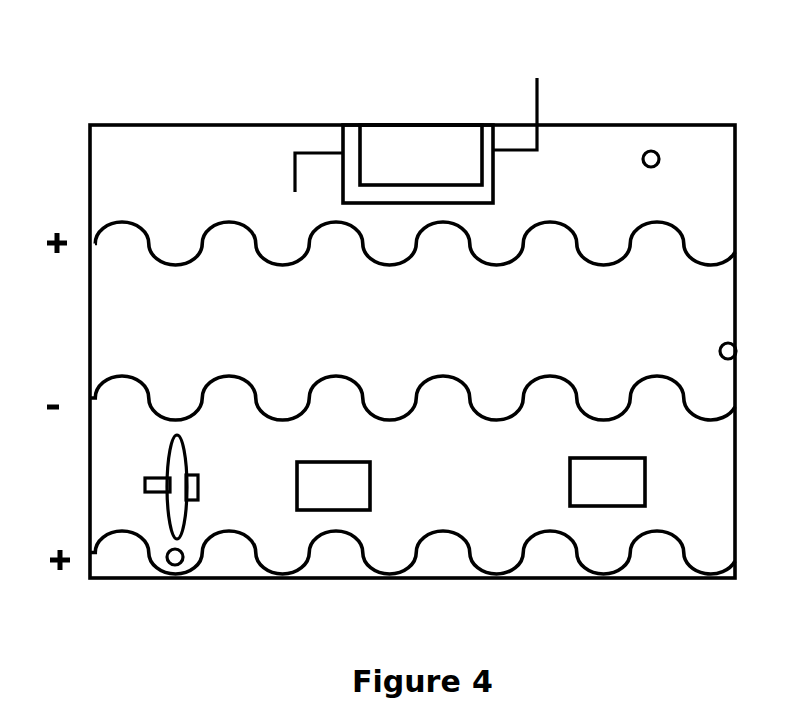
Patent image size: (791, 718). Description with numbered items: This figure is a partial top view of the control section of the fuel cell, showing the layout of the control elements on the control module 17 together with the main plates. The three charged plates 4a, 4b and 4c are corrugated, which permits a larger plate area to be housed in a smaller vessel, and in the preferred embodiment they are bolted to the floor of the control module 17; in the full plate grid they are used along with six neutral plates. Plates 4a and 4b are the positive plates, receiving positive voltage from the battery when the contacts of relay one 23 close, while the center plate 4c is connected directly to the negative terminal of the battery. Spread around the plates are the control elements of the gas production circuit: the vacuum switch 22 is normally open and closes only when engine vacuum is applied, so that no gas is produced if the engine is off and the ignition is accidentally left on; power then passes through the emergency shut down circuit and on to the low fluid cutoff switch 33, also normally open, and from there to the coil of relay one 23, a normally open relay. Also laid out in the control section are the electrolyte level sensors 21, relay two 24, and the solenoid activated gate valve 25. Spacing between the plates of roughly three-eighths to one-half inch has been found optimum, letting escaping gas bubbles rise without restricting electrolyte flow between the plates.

The positive plate 4a is at (415, 250).
The positive plate 4b is at (462, 540).
The center plate 4c is at (548, 376).
The control module 17 is at (90, 335).
The electrolyte level sensor 21 is at (655, 149).
The vacuum switch 22 is at (198, 488).
The relay one 23 is at (367, 492).
The relay two 24 is at (570, 485).
The solenoid activated gate valve 25 is at (420, 138).
The low fluid cutoff switch 33 is at (720, 340).